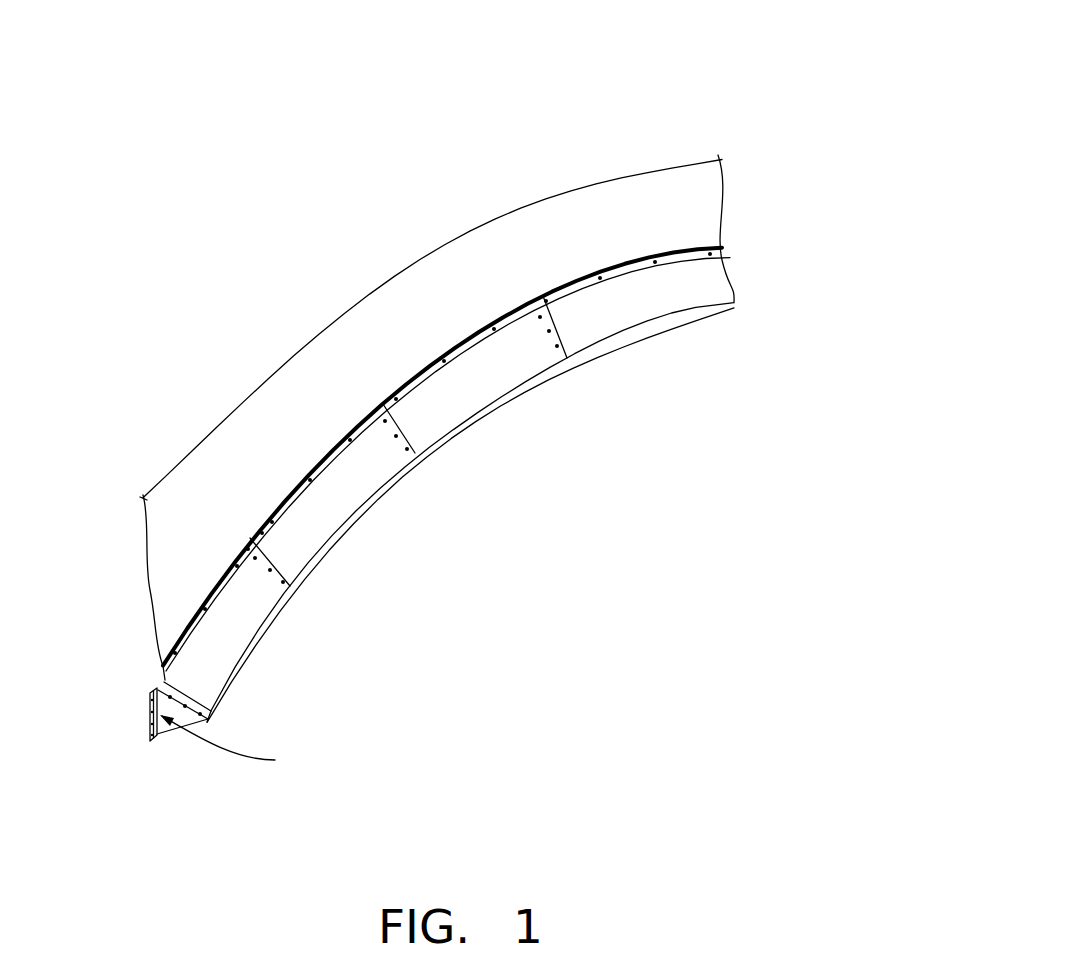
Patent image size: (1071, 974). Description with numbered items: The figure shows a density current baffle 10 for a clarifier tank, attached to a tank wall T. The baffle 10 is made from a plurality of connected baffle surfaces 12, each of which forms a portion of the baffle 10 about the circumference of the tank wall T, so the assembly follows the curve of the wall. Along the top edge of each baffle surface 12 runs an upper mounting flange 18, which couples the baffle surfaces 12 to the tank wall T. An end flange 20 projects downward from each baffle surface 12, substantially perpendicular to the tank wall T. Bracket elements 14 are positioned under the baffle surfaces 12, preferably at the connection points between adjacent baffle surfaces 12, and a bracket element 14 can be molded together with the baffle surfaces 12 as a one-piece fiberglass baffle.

The density current baffle 10 is at (519, 103).
The baffle surface 12 is at (655, 312).
The bracket element 14 is at (172, 727).
The upper mounting flange 18 is at (600, 271).
The end flange 20 is at (605, 339).
The tank wall T is at (313, 339).